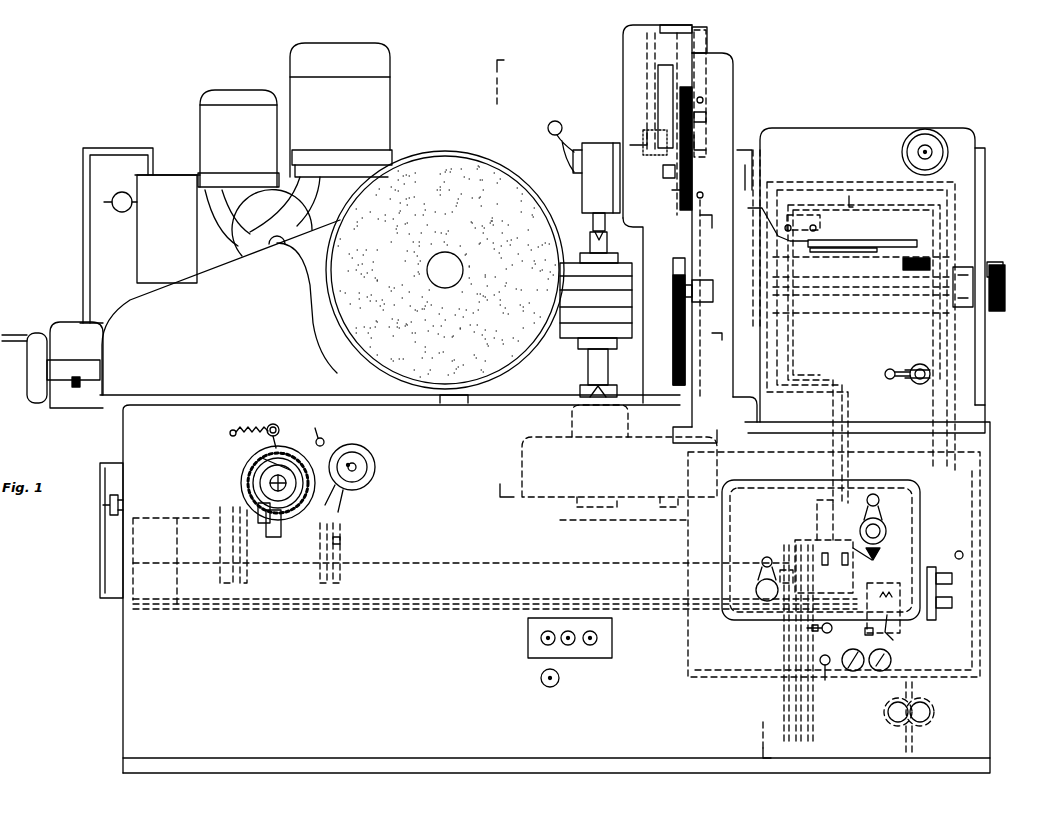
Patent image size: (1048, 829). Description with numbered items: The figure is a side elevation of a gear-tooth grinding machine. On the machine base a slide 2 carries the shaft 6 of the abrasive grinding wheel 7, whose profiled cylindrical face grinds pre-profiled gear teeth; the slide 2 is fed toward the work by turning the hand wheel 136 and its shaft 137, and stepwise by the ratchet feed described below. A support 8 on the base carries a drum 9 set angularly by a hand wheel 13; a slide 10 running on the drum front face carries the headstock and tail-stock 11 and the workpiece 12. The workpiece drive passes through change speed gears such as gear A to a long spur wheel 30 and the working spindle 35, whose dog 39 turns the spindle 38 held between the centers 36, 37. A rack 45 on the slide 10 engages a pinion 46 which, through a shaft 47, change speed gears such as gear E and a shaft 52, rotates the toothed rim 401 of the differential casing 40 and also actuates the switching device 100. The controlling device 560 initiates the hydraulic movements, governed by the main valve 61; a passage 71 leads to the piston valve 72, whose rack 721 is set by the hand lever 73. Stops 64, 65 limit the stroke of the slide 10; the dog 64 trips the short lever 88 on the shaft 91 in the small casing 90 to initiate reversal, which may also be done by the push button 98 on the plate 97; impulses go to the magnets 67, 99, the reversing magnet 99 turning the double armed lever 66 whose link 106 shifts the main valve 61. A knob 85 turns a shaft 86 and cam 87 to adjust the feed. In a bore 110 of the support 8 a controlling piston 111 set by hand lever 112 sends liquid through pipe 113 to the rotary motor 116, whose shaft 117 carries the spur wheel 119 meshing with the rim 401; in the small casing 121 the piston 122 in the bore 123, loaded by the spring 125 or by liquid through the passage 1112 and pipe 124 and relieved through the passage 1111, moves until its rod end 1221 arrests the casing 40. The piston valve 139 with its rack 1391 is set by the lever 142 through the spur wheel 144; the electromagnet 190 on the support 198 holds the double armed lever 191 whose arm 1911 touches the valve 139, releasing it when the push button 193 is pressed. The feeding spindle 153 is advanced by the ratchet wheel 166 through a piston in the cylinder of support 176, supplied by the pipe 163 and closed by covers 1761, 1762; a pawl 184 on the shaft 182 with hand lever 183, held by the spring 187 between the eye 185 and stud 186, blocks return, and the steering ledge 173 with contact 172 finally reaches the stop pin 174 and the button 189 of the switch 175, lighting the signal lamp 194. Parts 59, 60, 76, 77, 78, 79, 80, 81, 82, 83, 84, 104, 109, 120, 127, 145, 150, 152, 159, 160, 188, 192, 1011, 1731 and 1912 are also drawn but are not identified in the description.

The slide 2 is at (326, 380).
The shaft 6 is at (445, 265).
The abrasive grinding wheel 7 is at (472, 158).
The support 8 is at (781, 138).
The drum 9 is at (736, 68).
The slide 10 is at (623, 101).
The tail-stock 11 is at (584, 167).
The workpiece 12 is at (572, 338).
The hand wheel 13 is at (948, 151).
The long spur wheel 30 is at (712, 338).
The working spindle 35 is at (576, 410).
The center 36 is at (606, 388).
The center 37 is at (606, 237).
The spindle 38 is at (600, 362).
The dog 39 is at (612, 392).
The casing of the differential gearing 40 is at (890, 320).
The rack 45 is at (673, 372).
The pinion 46 is at (686, 312).
The shaft 47 is at (801, 346).
The shaft 52 is at (930, 703).
The valve 59 is at (829, 677).
The gauge 60 is at (852, 671).
The main valve 61 is at (857, 551).
The stop 64 is at (700, 192).
The stop 65 is at (703, 100).
The double armed lever 66 is at (952, 584).
The magnet 67 is at (952, 616).
The passage 71 is at (742, 169).
The piston valve 72 is at (866, 520).
The hand lever 73 is at (876, 494).
The cam 76 is at (886, 533).
The stop 77 is at (672, 190).
The slide 78 is at (652, 51).
The rack 79 is at (707, 40).
The stop 80 is at (663, 173).
The slide 81 is at (658, 76).
The line 82 is at (815, 392).
The lever 83 is at (716, 218).
The guide 84 is at (678, 258).
The knob 85 is at (1003, 266).
The shaft 86 is at (724, 260).
The cam 87 is at (713, 300).
The short lever 88 is at (706, 145).
The small casing 90 is at (705, 127).
The shaft 91 is at (706, 114).
The plate 97 is at (605, 626).
The push button 98 is at (552, 644).
The reversing magnet 99 is at (952, 582).
The switching device 100 is at (963, 307).
The rod 104 is at (975, 254).
The link 106 is at (954, 552).
The valve 109 is at (845, 565).
The bore 110 is at (932, 378).
The controlling piston 111 is at (925, 382).
The hand lever 112 is at (890, 379).
The pipe 113 is at (947, 330).
The rotary motor 116 is at (832, 230).
The shaft 117 is at (793, 287).
The spur wheel 119 is at (810, 287).
The valve 120 is at (807, 632).
The small casing 121 is at (928, 258).
The piston 122 is at (927, 277).
The bore 123 is at (935, 262).
The pipe 124 is at (930, 322).
The spring 125 is at (912, 258).
The gauge 127 is at (879, 671).
The hand wheel 136 is at (375, 473).
The shaft 137 is at (355, 464).
The piston valve 139 is at (868, 583).
The hand lever 142 is at (762, 568).
The spur wheel 144 is at (756, 592).
The line 145 is at (415, 605).
The line 150 is at (468, 602).
The switch 152 is at (123, 503).
The feeding spindle 153 is at (252, 478).
The valve 159 is at (824, 565).
The line 160 is at (796, 712).
The pipe 163 is at (438, 563).
The ratchet gear 166 is at (262, 488).
The contact 172 is at (340, 510).
The steering ledge 173 is at (330, 500).
The stop pin 174 is at (246, 543).
The switch 175 is at (282, 550).
The support 176 is at (302, 560).
The shaft 182 is at (321, 434).
The hand lever 183 is at (279, 427).
The pawl 184 is at (255, 466).
The eye 185 is at (268, 424).
The stud 186 is at (232, 429).
The spring 187 is at (246, 425).
The line 188 is at (784, 691).
The button 189 is at (281, 530).
The electromagnet 190 is at (880, 645).
The double armed lever 191 is at (904, 627).
The button 192 is at (572, 644).
The push button 193 is at (594, 644).
The signal lamp 194 is at (541, 676).
The support 198 is at (865, 632).
The toothed rim 401 is at (867, 273).
The controlling device 560 is at (825, 500).
The rack 721 is at (886, 520).
The piston 1011 is at (990, 308).
The passage 1111 is at (912, 368).
The passage 1112 is at (916, 380).
The outer end 1221 is at (890, 270).
The rack 1391 is at (768, 600).
The lever 1731 is at (262, 458).
The cover 1761 is at (340, 542).
The cover 1762 is at (228, 545).
The arm 1911 is at (920, 610).
The lever 1912 is at (912, 640).
The change speed gear A is at (665, 409).
The change speed gear E is at (1005, 290).